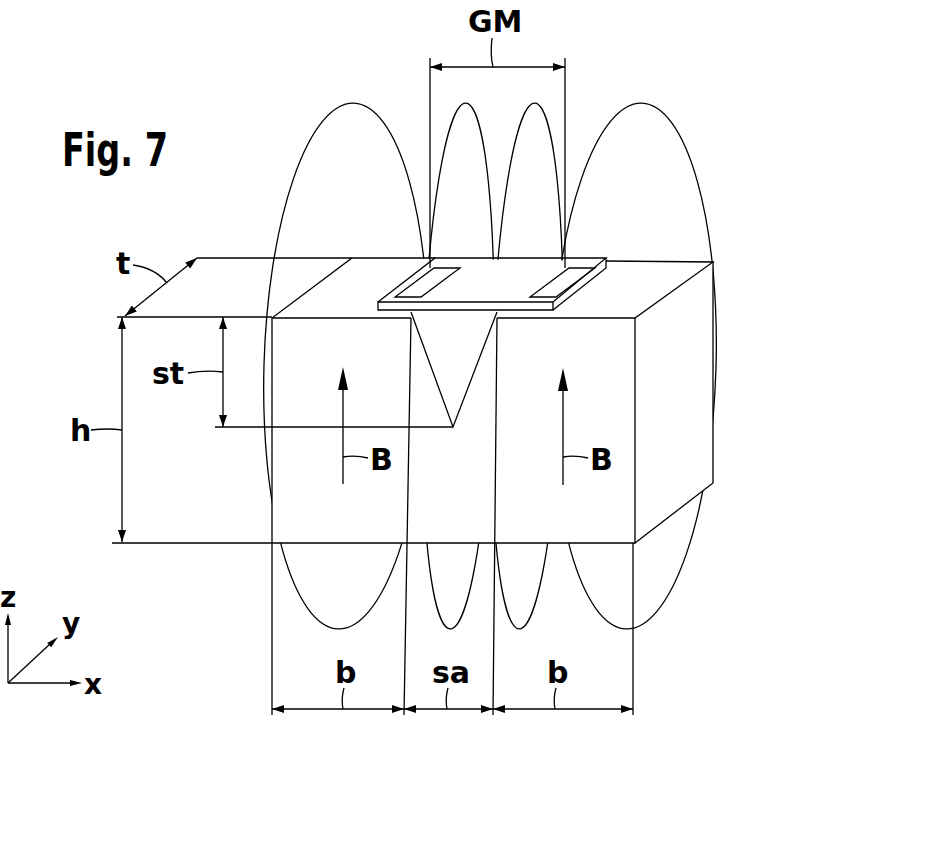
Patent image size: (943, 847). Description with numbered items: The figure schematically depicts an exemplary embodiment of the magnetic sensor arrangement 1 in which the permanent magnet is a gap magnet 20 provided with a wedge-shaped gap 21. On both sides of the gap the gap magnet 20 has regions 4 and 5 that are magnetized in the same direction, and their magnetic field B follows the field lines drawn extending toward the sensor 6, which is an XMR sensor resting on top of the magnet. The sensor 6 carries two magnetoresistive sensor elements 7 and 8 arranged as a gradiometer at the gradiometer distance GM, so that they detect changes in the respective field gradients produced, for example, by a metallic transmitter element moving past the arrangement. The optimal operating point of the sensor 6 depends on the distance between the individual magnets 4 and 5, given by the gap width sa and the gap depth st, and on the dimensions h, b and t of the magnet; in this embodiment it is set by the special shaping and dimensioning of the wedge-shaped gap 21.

The magnetic sensor arrangement 1 is at (715, 533).
The magnet region 4 is at (642, 287).
The magnet region 5 is at (368, 277).
The sensor 6 is at (518, 277).
The magnetoresistive sensor element 7 is at (443, 272).
The magnetoresistive sensor element 8 is at (567, 280).
The gap magnet 20 is at (682, 390).
The wedge-shaped gap 21 is at (440, 338).